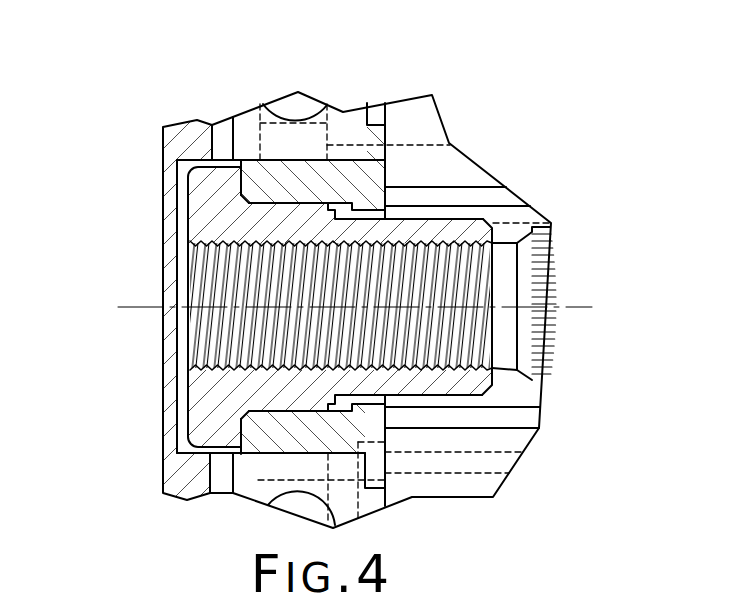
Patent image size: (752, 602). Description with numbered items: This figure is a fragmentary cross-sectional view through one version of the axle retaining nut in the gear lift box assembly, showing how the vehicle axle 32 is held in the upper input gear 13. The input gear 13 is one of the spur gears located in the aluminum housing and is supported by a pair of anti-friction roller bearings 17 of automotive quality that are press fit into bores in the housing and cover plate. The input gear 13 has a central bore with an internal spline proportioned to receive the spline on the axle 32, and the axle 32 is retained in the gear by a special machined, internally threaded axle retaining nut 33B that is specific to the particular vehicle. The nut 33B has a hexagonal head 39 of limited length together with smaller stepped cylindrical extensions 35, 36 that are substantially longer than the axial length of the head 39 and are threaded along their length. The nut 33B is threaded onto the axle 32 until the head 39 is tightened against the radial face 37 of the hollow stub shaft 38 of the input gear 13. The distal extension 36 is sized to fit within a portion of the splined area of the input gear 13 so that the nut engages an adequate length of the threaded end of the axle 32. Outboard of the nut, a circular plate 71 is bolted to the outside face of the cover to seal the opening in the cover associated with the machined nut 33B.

The upper input gear 13 is at (414, 113).
The anti-friction roller bearing 17 is at (257, 472).
The axle 32 is at (503, 243).
The axle retaining nut 33B is at (180, 232).
The stepped cylindrical extension 35 is at (310, 193).
The distal stepped cylindrical extension 36 is at (447, 218).
The radial face of stub shaft 37 is at (228, 180).
The hollow stub shaft 38 is at (292, 162).
The hexagonal head 39 is at (186, 194).
The circular plate 71 is at (165, 165).